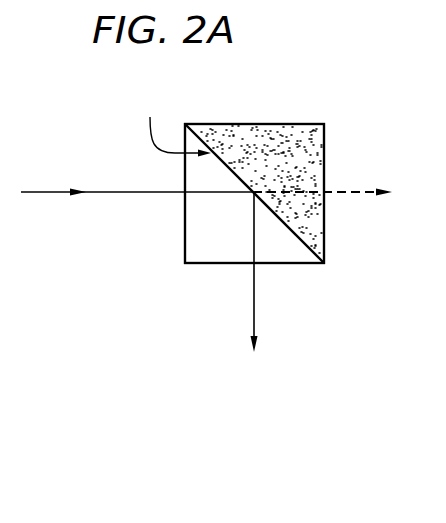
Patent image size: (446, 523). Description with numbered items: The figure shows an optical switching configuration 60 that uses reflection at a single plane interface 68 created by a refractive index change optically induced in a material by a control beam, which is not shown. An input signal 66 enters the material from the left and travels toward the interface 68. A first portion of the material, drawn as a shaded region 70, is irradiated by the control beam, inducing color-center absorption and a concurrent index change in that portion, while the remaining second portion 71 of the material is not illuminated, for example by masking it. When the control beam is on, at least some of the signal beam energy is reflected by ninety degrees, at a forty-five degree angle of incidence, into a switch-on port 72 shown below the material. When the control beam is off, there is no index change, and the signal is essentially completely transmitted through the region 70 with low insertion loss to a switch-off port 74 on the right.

The optical switching configuration 60 is at (304, 86).
The input signal 66 is at (128, 192).
The single plane interface 68 is at (173, 124).
The shaded region 70 is at (324, 158).
The second portion of material 71 is at (185, 244).
The switch-on port 72 is at (257, 272).
The switch-off port 74 is at (343, 196).